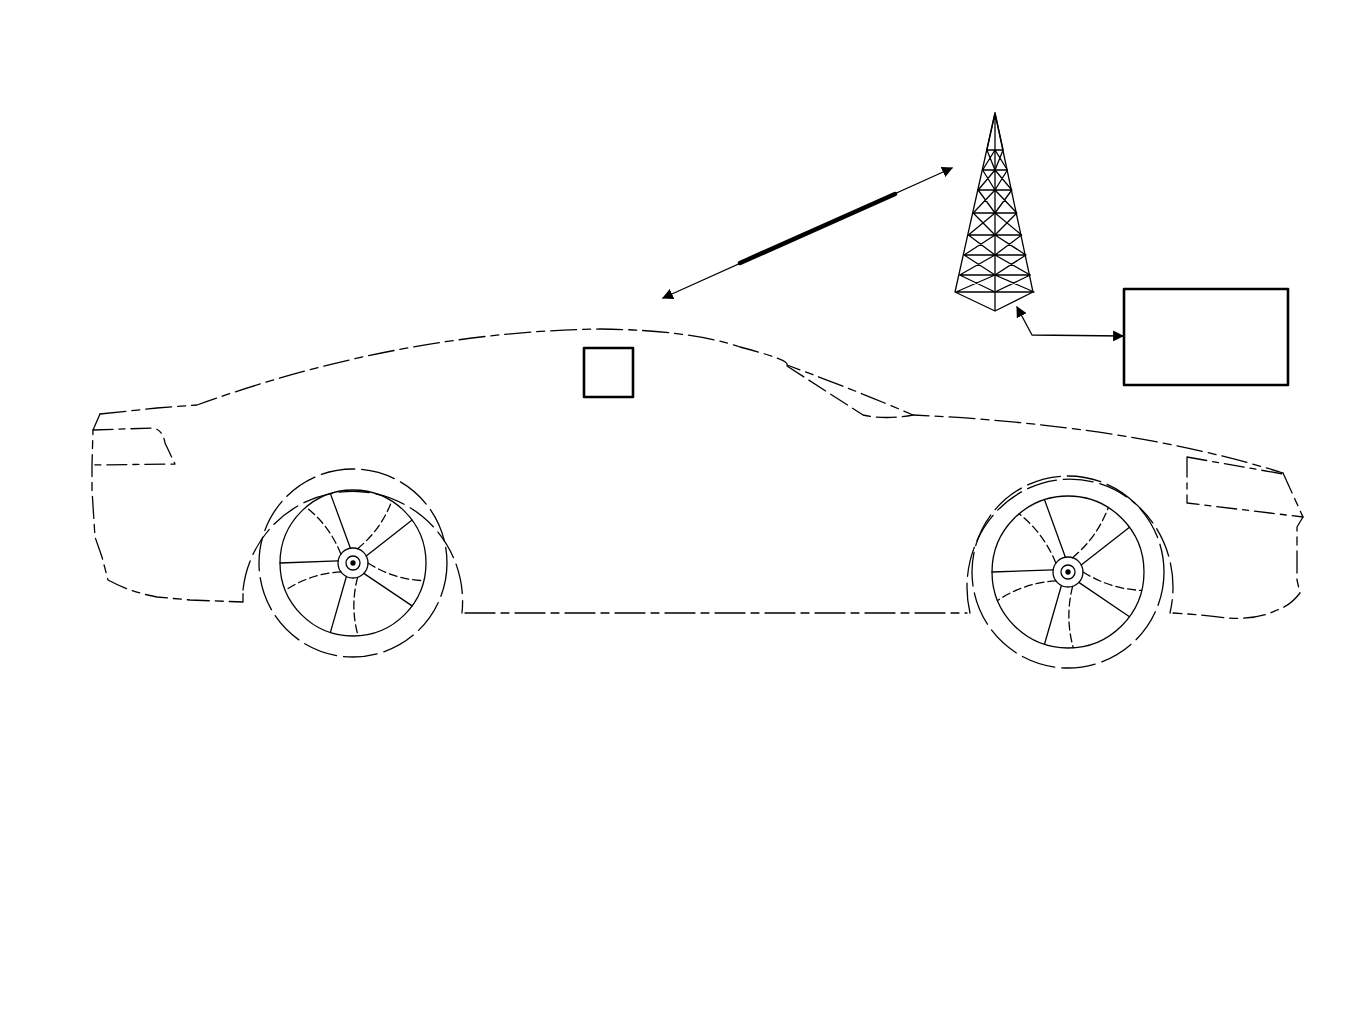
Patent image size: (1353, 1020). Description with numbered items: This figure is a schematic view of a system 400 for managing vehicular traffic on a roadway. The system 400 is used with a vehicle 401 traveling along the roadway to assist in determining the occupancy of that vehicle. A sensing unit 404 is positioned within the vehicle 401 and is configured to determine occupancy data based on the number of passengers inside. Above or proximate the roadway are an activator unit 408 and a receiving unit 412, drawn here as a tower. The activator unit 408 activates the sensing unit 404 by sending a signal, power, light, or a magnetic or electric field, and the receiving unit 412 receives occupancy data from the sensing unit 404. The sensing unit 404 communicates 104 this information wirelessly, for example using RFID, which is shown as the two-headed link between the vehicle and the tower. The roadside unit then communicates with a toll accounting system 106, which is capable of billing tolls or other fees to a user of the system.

The system 400 is at (370, 108).
The vehicle 401 is at (386, 352).
The sensing unit 404 is at (608, 398).
The communicates 104 is at (797, 237).
The activator unit 408 is at (1003, 133).
The receiving unit 412 is at (1017, 208).
The toll accounting system 106 is at (1206, 289).